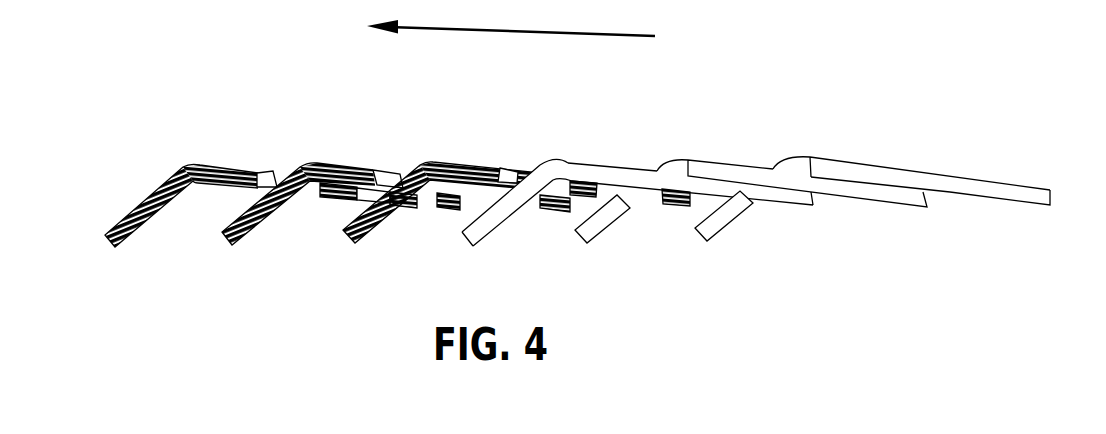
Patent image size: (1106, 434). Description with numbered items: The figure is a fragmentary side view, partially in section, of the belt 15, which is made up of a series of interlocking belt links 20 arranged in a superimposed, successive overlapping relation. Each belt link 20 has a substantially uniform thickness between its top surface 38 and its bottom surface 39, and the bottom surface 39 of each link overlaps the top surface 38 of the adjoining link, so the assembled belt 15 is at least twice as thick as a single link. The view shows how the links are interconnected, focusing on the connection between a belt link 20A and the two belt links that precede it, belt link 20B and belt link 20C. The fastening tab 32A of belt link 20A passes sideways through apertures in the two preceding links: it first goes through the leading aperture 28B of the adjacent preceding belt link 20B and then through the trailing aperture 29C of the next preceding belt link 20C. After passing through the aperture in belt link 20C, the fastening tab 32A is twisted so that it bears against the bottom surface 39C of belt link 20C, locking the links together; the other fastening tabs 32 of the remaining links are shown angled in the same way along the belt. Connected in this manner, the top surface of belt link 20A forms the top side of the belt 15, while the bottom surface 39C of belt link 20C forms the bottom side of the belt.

The belt 15 is at (813, 153).
The belt link 20 is at (1010, 193).
The belt link 20A is at (622, 165).
The belt link 20B is at (485, 163).
The belt link 20C is at (325, 163).
The leading aperture 28B is at (517, 168).
The trailing aperture 29C is at (532, 203).
The fastening tab 32 is at (137, 208).
The fastening tab 32A is at (470, 237).
The top surface 38 is at (957, 175).
The bottom surface 39 is at (953, 193).
The bottom surface 39C is at (457, 213).